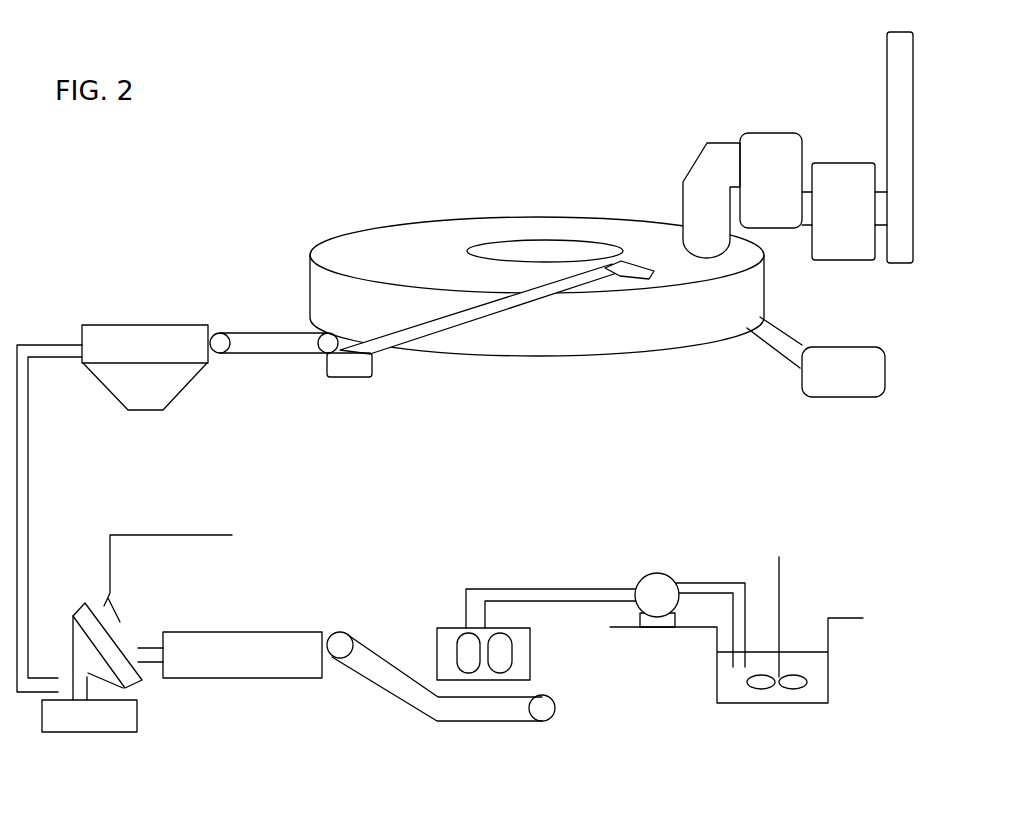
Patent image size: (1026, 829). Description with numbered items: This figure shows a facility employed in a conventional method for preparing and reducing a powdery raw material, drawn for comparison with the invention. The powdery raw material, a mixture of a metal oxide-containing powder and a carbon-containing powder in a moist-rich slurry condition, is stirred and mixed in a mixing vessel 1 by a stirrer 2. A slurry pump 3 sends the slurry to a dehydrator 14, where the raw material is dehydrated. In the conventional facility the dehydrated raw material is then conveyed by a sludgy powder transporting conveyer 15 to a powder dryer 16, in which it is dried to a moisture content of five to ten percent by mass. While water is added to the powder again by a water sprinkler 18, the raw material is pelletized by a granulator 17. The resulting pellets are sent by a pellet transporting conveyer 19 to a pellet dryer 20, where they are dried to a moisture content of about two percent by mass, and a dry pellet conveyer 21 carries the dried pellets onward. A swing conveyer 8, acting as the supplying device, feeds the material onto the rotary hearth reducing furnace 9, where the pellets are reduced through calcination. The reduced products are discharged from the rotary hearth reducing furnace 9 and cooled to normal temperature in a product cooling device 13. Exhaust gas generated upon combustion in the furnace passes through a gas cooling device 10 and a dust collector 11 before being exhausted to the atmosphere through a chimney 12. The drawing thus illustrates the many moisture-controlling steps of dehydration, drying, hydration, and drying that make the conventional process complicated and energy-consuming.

The mixing vessel 1 is at (747, 700).
The stirrer 2 is at (782, 622).
The slurry pump 3 is at (648, 627).
The swing conveyer 8 is at (430, 335).
The rotary hearth reducing furnace 9 is at (518, 227).
The gas cooling device 10 is at (743, 133).
The dust collector 11 is at (830, 250).
The chimney 12 is at (887, 85).
The product cooling device 13 is at (840, 390).
The dehydrator 14 is at (457, 627).
The sludgy powder transporting conveyer 15 is at (375, 682).
The powder dryer 16 is at (223, 625).
The granulator 17 is at (133, 712).
The water sprinkler 18 is at (188, 535).
The pellet transporting conveyer 19 is at (20, 440).
The pellet dryer 20 is at (113, 325).
The dry pellet conveyer 21 is at (245, 335).